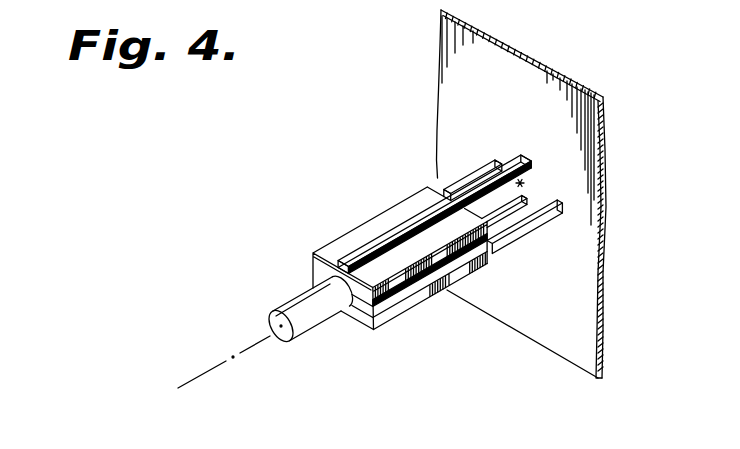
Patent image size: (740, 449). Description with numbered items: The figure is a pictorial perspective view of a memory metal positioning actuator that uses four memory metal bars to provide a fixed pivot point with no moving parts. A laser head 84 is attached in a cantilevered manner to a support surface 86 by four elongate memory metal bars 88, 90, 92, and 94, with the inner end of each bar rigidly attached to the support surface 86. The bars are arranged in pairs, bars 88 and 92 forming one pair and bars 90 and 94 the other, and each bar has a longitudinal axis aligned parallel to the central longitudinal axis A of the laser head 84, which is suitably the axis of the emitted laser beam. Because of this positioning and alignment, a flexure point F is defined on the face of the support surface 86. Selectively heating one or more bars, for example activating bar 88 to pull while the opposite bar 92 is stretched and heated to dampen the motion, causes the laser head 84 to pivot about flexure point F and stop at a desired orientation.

The laser head 84 is at (326, 255).
The support surface 86 is at (518, 70).
The memory metal bar 88 is at (388, 236).
The memory metal bar 90 is at (447, 186).
The memory metal bar 92 is at (510, 202).
The memory metal bar 94 is at (402, 305).
The central longitudinal axis A is at (200, 375).
The flexure point F is at (523, 182).